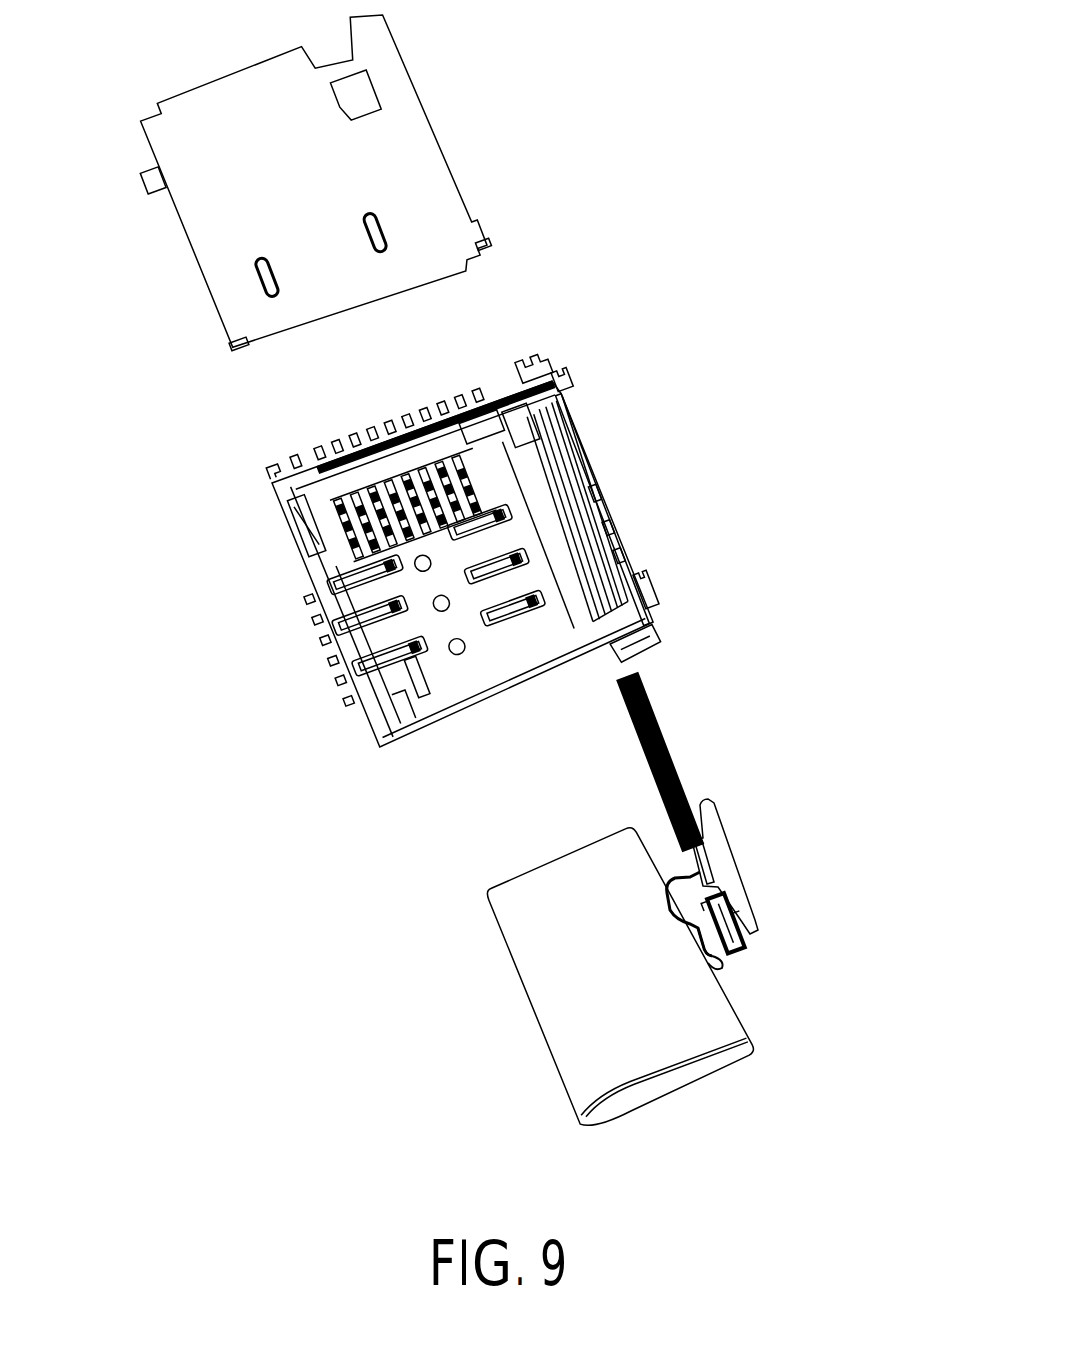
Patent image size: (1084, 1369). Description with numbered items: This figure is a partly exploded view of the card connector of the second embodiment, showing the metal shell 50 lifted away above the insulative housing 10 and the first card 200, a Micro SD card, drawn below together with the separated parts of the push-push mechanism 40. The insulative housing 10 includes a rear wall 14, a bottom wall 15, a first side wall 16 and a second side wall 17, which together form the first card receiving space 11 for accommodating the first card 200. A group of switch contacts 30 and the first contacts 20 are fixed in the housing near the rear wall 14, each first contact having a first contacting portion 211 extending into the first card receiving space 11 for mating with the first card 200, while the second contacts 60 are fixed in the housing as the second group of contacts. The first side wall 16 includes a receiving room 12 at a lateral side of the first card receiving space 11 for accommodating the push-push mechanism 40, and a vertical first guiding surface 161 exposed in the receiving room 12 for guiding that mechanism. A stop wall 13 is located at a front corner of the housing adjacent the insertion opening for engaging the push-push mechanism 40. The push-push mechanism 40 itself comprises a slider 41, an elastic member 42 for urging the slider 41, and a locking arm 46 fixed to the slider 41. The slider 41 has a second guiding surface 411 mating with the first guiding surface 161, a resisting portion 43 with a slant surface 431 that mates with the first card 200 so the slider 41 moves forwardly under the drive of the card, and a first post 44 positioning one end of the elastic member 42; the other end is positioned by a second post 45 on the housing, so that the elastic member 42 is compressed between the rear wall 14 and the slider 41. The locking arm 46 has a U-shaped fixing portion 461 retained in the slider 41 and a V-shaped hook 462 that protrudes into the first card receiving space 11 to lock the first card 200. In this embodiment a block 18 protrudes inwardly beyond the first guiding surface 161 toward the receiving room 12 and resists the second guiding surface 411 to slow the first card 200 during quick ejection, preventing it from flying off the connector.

The metal shell 50 is at (413, 150).
The insulative housing 10 is at (325, 540).
The first contacts 20 is at (352, 437).
The rear wall 14 is at (410, 450).
The group of switch contacts 30 is at (465, 397).
The second post 45 is at (525, 412).
The receiving room 12 is at (535, 458).
The first guiding surface 161 is at (610, 530).
The first side wall 16 is at (615, 566).
The block 18 is at (652, 604).
The stop wall 13 is at (625, 645).
The first contacting portion 211 is at (370, 565).
The second contacts 60 is at (357, 595).
The second side wall 17 is at (385, 688).
The first card receiving space 11 is at (443, 672).
The bottom wall 15 is at (490, 662).
The elastic member 42 is at (647, 700).
The push-push mechanism 40 is at (615, 899).
The slider 41 is at (718, 845).
The first post 44 is at (700, 860).
The resisting portion 43 is at (670, 892).
The slant surface 431 is at (695, 920).
The locking arm 46 is at (750, 950).
The U-shaped fixing portion 461 is at (730, 907).
The second guiding surface 411 is at (753, 915).
The hook 462 is at (722, 963).
The first card 200 is at (583, 1015).